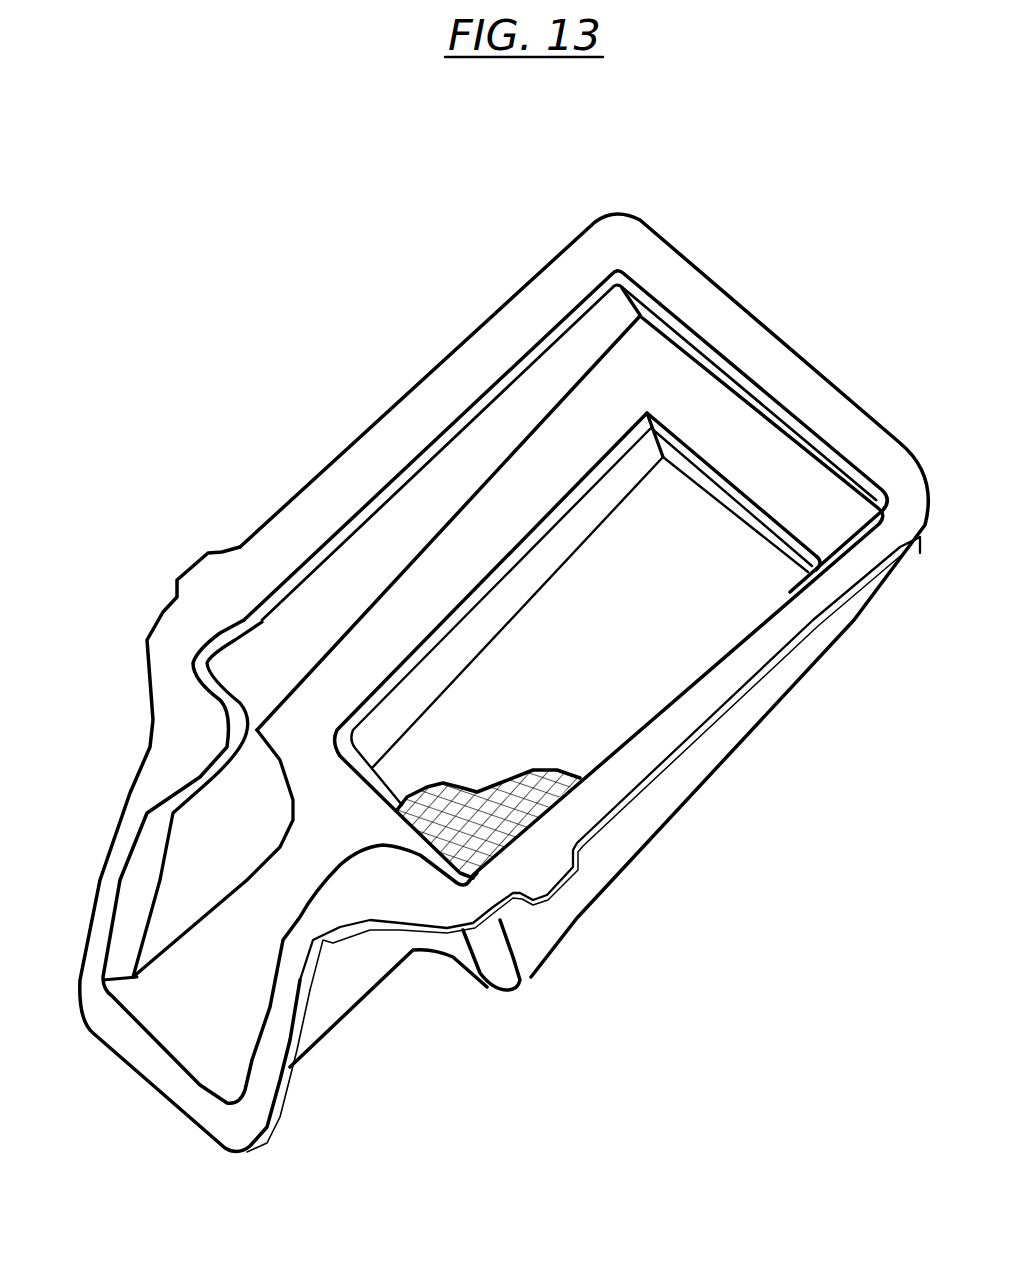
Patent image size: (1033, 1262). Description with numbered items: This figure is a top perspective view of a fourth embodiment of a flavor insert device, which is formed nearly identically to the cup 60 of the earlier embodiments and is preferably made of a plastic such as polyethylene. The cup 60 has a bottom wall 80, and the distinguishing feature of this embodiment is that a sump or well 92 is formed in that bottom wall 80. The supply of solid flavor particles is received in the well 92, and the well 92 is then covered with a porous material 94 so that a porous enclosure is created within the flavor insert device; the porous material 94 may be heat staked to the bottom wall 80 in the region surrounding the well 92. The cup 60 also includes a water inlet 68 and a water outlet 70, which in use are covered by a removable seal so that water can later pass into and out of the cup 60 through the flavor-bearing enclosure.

The cup 60 is at (687, 797).
The water inlet 68 is at (600, 333).
The water outlet 70 is at (207, 1002).
The bottom wall 80 is at (687, 393).
The well 92 is at (700, 560).
The porous material 94 is at (480, 787).